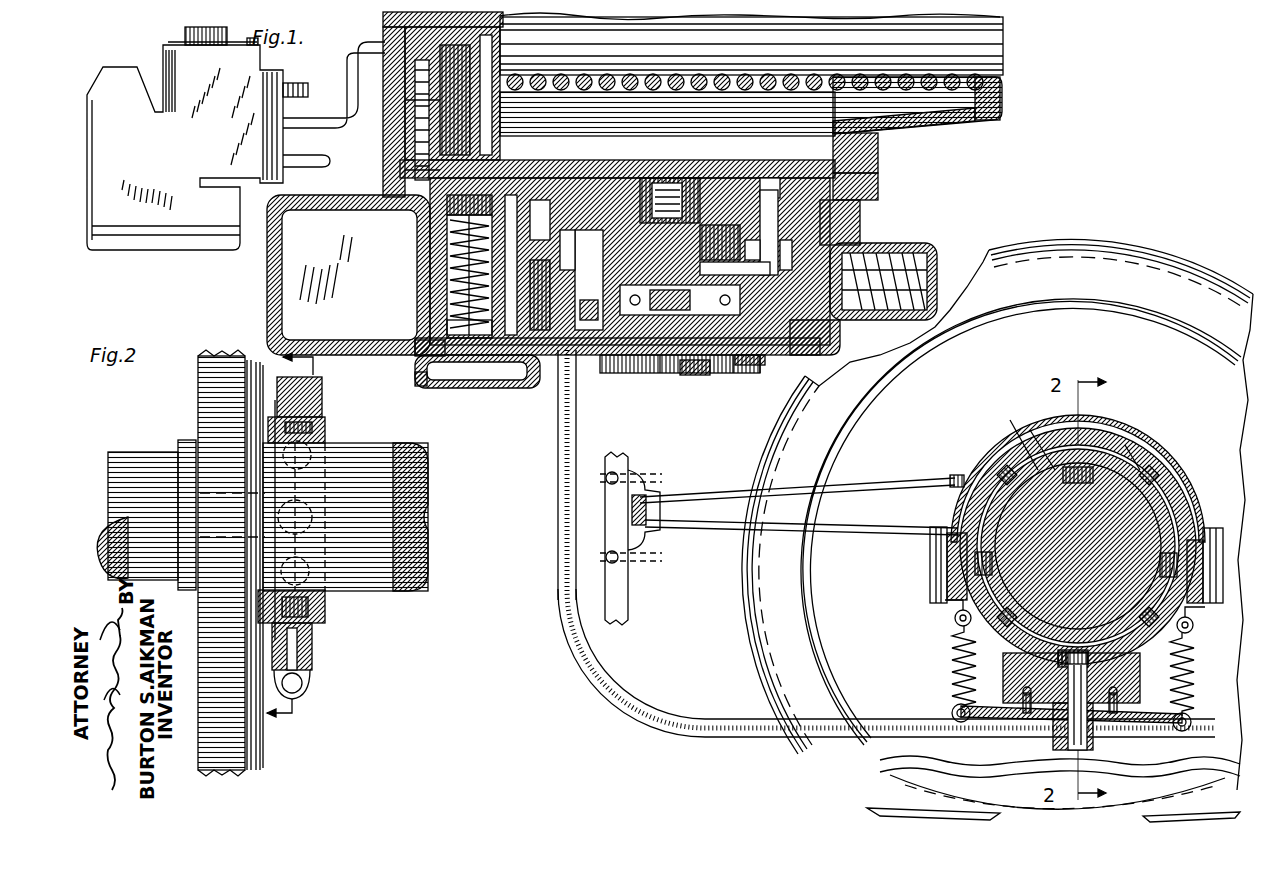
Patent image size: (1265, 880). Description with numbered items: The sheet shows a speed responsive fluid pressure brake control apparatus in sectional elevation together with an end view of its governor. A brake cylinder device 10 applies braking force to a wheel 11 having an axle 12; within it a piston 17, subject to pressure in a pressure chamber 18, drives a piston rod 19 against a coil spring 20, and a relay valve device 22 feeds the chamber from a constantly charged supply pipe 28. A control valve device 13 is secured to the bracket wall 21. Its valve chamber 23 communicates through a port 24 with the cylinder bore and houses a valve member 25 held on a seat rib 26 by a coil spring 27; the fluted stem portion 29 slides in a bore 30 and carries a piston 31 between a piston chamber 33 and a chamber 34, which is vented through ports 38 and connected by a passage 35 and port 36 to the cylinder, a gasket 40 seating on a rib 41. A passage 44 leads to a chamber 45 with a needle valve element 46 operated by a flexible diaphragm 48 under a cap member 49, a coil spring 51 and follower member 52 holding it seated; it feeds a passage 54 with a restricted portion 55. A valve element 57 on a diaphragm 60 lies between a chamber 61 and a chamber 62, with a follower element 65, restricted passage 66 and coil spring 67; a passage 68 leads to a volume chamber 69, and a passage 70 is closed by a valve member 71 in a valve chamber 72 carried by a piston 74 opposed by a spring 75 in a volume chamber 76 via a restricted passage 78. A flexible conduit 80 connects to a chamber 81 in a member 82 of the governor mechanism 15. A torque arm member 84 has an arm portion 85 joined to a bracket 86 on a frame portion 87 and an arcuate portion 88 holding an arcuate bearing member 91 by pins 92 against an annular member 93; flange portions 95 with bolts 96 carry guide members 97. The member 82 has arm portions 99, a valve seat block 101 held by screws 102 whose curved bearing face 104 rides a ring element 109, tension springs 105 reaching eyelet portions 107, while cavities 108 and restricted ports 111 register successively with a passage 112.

In FIG. 1, the brake cylinder device 10 is at (415, 150).
In FIG. 1, the wheel 11 is at (1067, 290).
In FIG. 2, the wheel 11 is at (232, 372).
In FIG. 1, the axle 12 is at (1016, 433).
In FIG. 2, the axle 12 is at (133, 463).
In FIG. 1, the control valve device 13 is at (592, 360).
In FIG. 1, the control pressure governor mechanism 15 is at (928, 598).
In FIG. 1, the piston 17 is at (415, 123).
In FIG. 1, the pressure chamber 18 is at (415, 92).
In FIG. 1, the piston rod 19 is at (985, 63).
In FIG. 1, the coil spring 20 is at (898, 93).
In FIG. 1, the bracket wall 21 is at (625, 165).
In FIG. 1, the relay valve device 22 is at (185, 68).
In FIG. 1, the valve chamber 23 is at (680, 160).
In FIG. 1, the port 24 is at (655, 180).
In FIG. 1, the valve member 25 is at (728, 180).
In FIG. 1, the seat rib 26 is at (778, 225).
In FIG. 1, the coil spring 27 is at (690, 200).
In FIG. 1, the supply pipe 28 is at (300, 92).
In FIG. 1, the fluted stem portion 29 is at (733, 372).
In FIG. 1, the bore 30 is at (640, 372).
In FIG. 1, the piston 31 is at (660, 372).
In FIG. 1, the piston chamber 33 is at (745, 360).
In FIG. 1, the chamber 34 is at (777, 255).
In FIG. 1, the passage 35 is at (785, 185).
In FIG. 1, the port 36 is at (850, 176).
In FIG. 1, the ports 38 is at (680, 283).
In FIG. 1, the gasket 40 is at (695, 372).
In FIG. 1, the rib 41 is at (740, 251).
In FIG. 1, the passage 44 is at (835, 213).
In FIG. 1, the chamber 45 is at (880, 268).
In FIG. 1, the needle valve element 46 is at (870, 355).
In FIG. 1, the flexible diaphragm 48 is at (825, 348).
In FIG. 1, the cap member 49 is at (840, 330).
In FIG. 1, the coil spring 51 is at (930, 258).
In FIG. 1, the follower member 52 is at (852, 258).
In FIG. 1, the passage 54 is at (760, 372).
In FIG. 1, the restricted portion 55 is at (835, 393).
In FIG. 1, the valve element 57 is at (625, 250).
In FIG. 1, the diaphragm 60 is at (495, 385).
In FIG. 1, the chamber 61 is at (418, 380).
In FIG. 1, the chamber 62 is at (548, 385).
In FIG. 1, the follower element 65 is at (540, 200).
In FIG. 1, the restricted passage 66 is at (510, 245).
In FIG. 1, the coil spring 67 is at (477, 371).
In FIG. 1, the passage 68 is at (447, 285).
In FIG. 1, the volume chamber 69 is at (272, 302).
In FIG. 1, the passage 70 is at (415, 172).
In FIG. 1, the valve member 71 is at (415, 196).
In FIG. 1, the valve chamber 72 is at (380, 200).
In FIG. 1, the piston 74 is at (447, 245).
In FIG. 1, the spring 75 is at (430, 310).
In FIG. 1, the volume chamber 76 is at (415, 355).
In FIG. 1, the restricted passage 78 is at (430, 226).
In FIG. 1, the flexible conduit 80 is at (625, 700).
In FIG. 1, the chamber 81 is at (1130, 738).
In FIG. 1, the member 82 is at (1095, 737).
In FIG. 2, the member 82 is at (302, 682).
In FIG. 1, the torque arm member 84 is at (963, 487).
In FIG. 1, the arm portion 85 is at (717, 508).
In FIG. 1, the bracket 86 is at (665, 505).
In FIG. 1, the vehicle frame portion 87 is at (620, 475).
In FIG. 1, the arcuate portion 88 is at (1178, 478).
In FIG. 1, the arcuate bearing member 91 is at (1045, 455).
In FIG. 2, the arcuate bearing member 91 is at (322, 397).
In FIG. 1, the pins 92 is at (1083, 432).
In FIG. 2, the pins 92 is at (300, 372).
In FIG. 1, the annular member 93 is at (1182, 520).
In FIG. 2, the annular member 93 is at (330, 600).
In FIG. 1, the flange portions 95 is at (928, 555).
In FIG. 1, the bolts 96 is at (928, 580).
In FIG. 1, the guide members 97 is at (955, 614).
In FIG. 1, the arm portions 99 is at (975, 720).
In FIG. 1, the valve seat block 101 is at (1185, 712).
In FIG. 1, the screws 102 is at (1027, 715).
In FIG. 1, the curved bearing face 104 is at (955, 668).
In FIG. 1, the tension springs 105 is at (952, 652).
In FIG. 1, the eyelet portions 107 is at (955, 622).
In FIG. 1, the cavities 108 is at (1145, 568).
In FIG. 2, the cavities 108 is at (322, 608).
In FIG. 1, the ring element 109 is at (1105, 510).
In FIG. 1, the restricted ports 111 is at (1125, 445).
In FIG. 1, the passage 112 is at (1088, 670).
In FIG. 2, the passage 112 is at (315, 650).